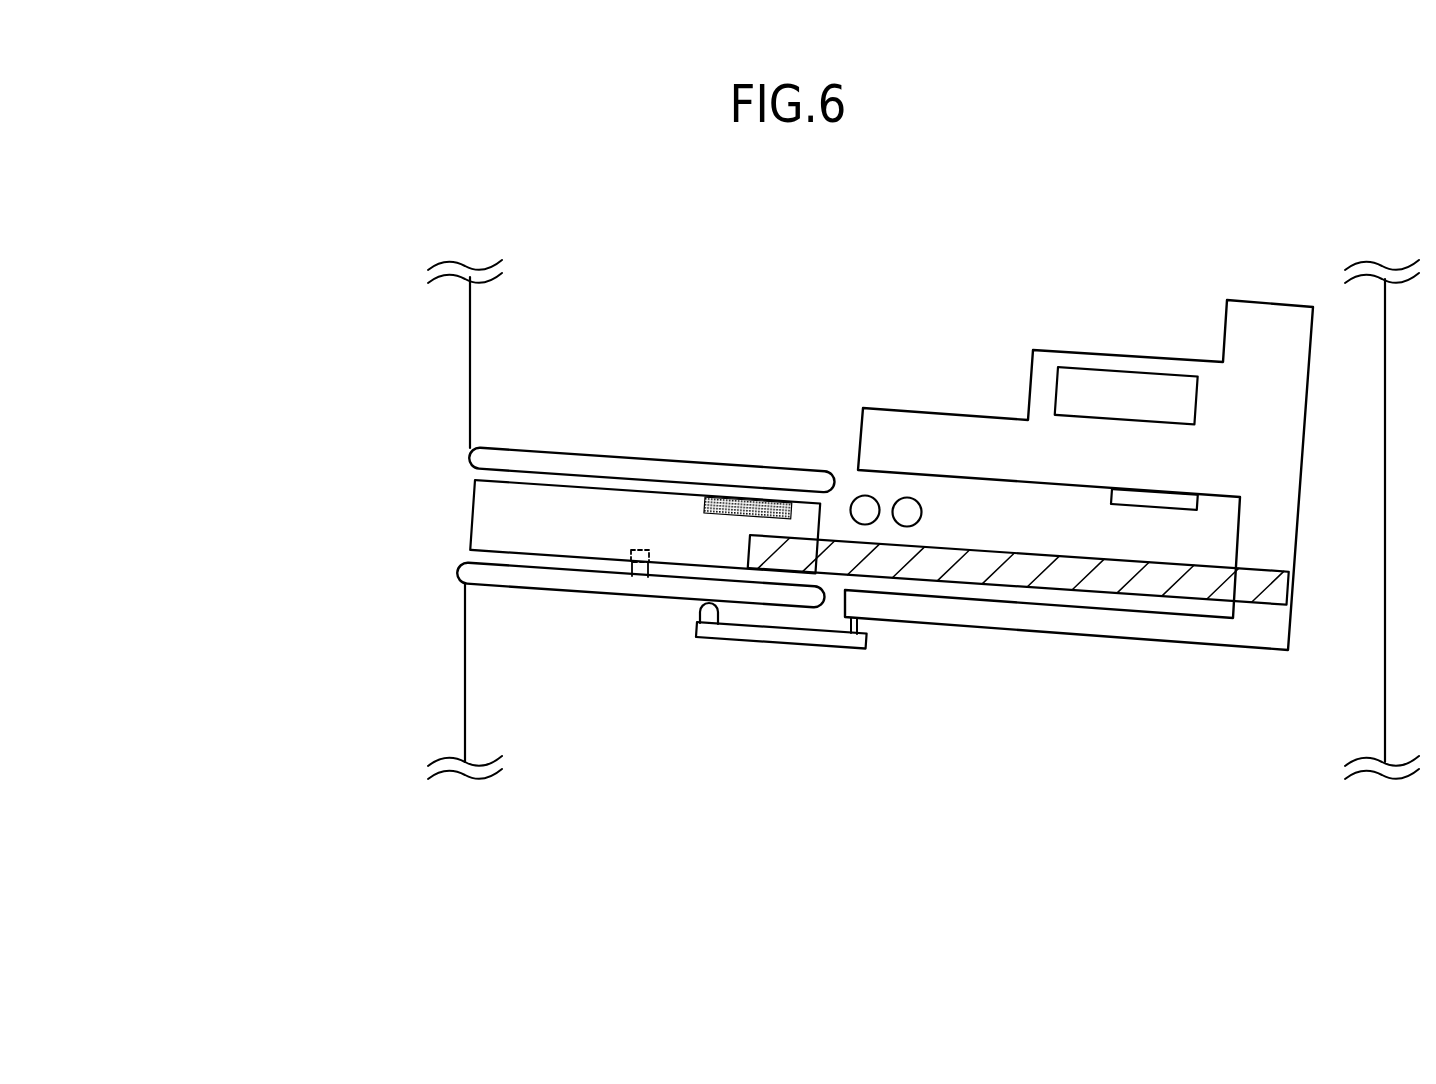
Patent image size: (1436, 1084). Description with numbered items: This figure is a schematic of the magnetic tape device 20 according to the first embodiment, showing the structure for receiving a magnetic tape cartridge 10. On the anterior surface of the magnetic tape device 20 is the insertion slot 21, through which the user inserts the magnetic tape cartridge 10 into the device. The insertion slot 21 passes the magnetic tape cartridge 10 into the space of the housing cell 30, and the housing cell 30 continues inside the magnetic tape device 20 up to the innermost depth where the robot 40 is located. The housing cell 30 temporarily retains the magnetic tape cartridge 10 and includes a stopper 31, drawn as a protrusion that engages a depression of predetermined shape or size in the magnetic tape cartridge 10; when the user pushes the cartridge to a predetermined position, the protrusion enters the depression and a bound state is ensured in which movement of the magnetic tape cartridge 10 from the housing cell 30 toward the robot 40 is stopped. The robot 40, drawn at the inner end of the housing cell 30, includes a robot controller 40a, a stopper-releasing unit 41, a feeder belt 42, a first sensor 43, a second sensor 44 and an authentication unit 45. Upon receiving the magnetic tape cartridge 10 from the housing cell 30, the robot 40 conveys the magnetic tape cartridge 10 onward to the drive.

The magnetic tape cartridge 10 is at (492, 522).
The magnetic tape device 20 is at (469, 378).
The insertion slot 21 is at (468, 500).
The housing cell 30 is at (583, 480).
The stopper 31 is at (638, 574).
The robot 40 is at (1043, 358).
The robot controller 40a is at (1140, 388).
The stopper-releasing unit 41 is at (775, 633).
The feeder belt 42 is at (1088, 583).
The first sensor 43 is at (864, 508).
The second sensor 44 is at (907, 510).
The authentication unit 45 is at (1247, 476).